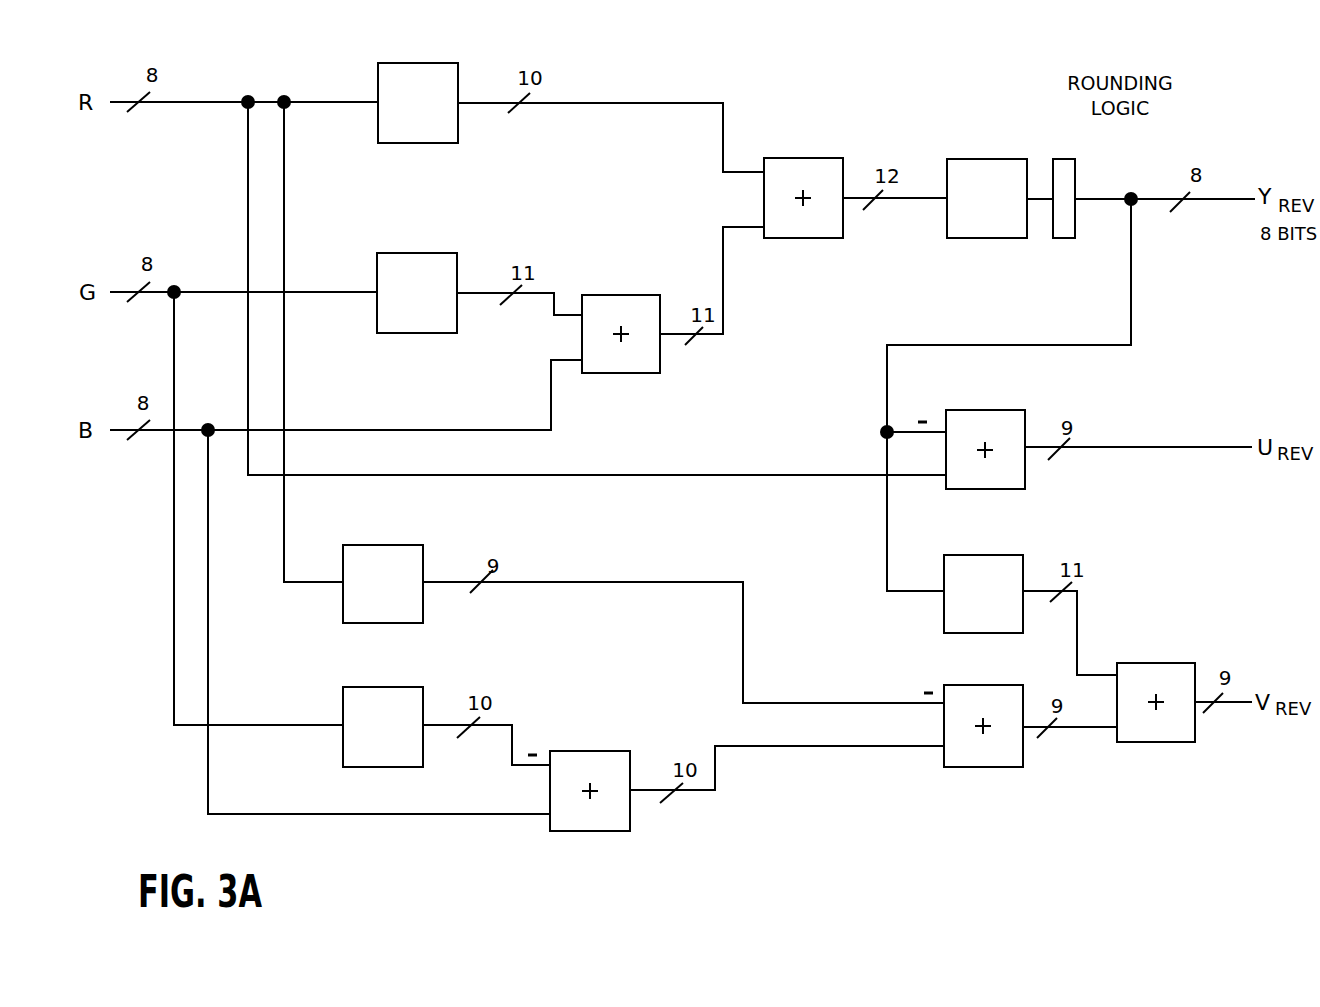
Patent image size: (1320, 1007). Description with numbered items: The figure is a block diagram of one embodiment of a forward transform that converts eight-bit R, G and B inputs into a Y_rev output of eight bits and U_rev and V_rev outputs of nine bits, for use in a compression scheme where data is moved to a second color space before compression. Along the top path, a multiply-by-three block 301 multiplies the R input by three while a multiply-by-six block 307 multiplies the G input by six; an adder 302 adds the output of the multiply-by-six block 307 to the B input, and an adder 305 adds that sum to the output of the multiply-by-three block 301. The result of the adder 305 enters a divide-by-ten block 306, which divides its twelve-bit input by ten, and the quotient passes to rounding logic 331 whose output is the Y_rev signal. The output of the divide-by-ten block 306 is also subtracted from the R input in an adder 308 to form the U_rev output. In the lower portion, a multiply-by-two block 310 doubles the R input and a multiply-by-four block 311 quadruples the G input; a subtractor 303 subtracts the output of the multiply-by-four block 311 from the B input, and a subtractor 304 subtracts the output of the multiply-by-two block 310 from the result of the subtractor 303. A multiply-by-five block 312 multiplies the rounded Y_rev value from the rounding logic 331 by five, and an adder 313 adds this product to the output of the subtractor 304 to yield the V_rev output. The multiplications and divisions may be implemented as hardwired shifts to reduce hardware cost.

The multiply-by-three block 301 is at (423, 67).
The multiply-by-six block 307 is at (422, 259).
The adder 302 is at (636, 375).
The adder 305 is at (805, 162).
The divide-by-ten block 306 is at (977, 161).
The rounding logic 331 is at (1065, 160).
The adder 308 is at (1002, 418).
The multiply-by-five block 312 is at (988, 559).
The multiply-by-two block 310 is at (388, 549).
The multiply-by-four block 311 is at (387, 692).
The subtractor 303 is at (597, 818).
The subtractor 304 is at (988, 754).
The adder 313 is at (1158, 728).